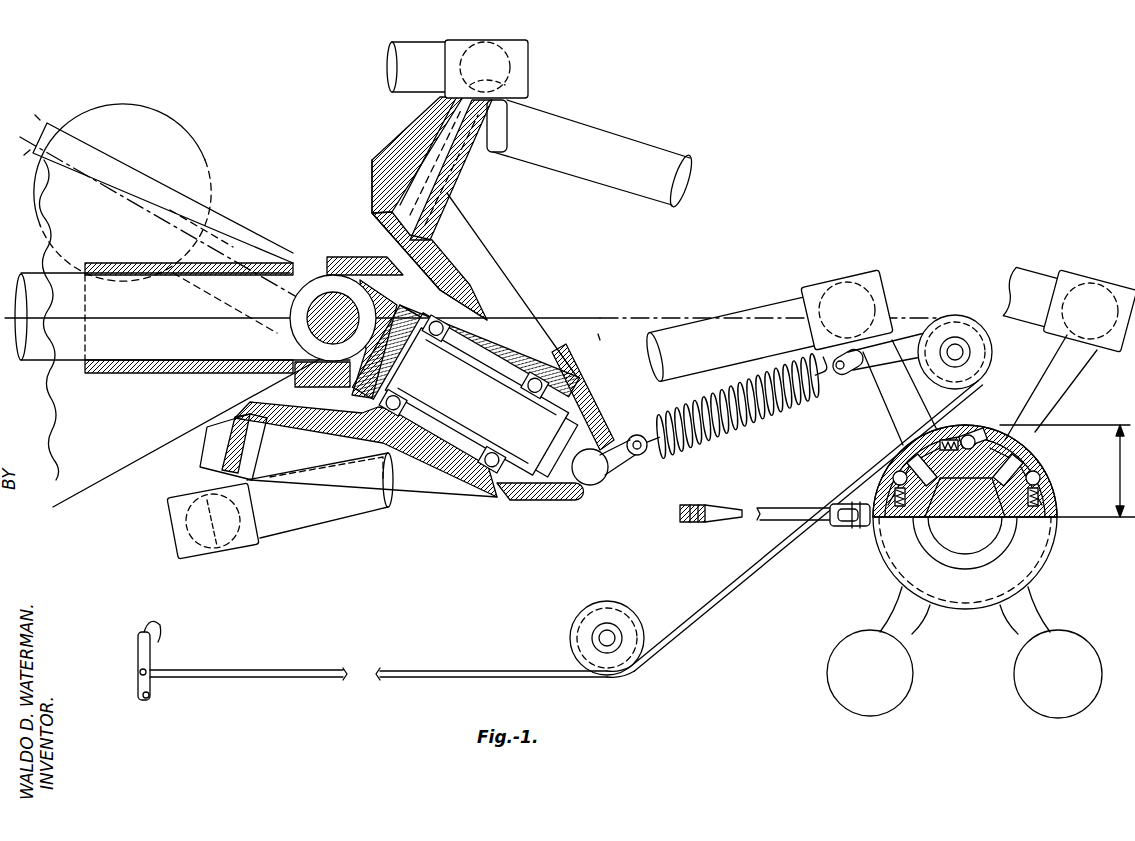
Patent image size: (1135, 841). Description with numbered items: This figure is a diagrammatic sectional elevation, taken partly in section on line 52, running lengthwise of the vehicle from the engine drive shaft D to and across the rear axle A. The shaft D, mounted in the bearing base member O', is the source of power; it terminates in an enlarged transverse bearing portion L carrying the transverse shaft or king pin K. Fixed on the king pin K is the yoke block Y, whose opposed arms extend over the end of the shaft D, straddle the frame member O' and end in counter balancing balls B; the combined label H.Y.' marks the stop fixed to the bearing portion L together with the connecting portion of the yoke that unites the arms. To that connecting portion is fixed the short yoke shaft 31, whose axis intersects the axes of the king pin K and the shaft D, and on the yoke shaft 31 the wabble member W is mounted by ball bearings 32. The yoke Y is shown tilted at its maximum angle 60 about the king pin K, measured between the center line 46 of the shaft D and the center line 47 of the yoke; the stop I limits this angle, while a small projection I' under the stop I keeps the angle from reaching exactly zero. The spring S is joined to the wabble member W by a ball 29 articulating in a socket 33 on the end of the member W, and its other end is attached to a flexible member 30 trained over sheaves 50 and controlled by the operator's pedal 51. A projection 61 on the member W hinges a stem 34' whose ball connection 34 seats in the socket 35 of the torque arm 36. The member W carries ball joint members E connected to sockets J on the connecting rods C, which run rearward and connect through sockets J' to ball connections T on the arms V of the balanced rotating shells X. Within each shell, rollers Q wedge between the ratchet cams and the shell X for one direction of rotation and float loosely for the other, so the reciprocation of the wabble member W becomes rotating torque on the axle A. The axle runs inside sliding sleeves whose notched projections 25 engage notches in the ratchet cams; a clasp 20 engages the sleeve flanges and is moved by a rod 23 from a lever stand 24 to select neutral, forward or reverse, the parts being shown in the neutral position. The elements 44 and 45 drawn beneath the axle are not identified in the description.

The clasp 20 is at (848, 522).
The rod 23 is at (776, 505).
The lever stand 24 is at (680, 513).
The projections on the sleeve 25 is at (900, 470).
The ball 29 is at (585, 497).
The flexible member 30 is at (487, 668).
The yoke shaft 31 is at (478, 405).
The ball bearings 32 is at (458, 478).
The socket 33 is at (525, 500).
The ball connection 34 is at (521, 67).
The stem 34' is at (420, 162).
The socket 35 is at (530, 92).
The torque arm 36 is at (388, 62).
The leg 44 is at (1010, 618).
The wheel 45 is at (1012, 672).
The center line of shaft D 46 is at (552, 318).
The center line of yoke Y 47 is at (610, 470).
The sheaves 50 is at (965, 325).
The pedal 51 is at (150, 657).
The section line 52 is at (1065, 471).
The maximum angle 60 is at (574, 438).
The projection 61 is at (455, 182).
The rear axle A is at (1000, 537).
The counter balancing balls B is at (150, 125).
The connecting rods C is at (522, 158).
The engine drive shaft D is at (50, 362).
The ball joint members E is at (222, 540).
The stop H and yoke connecting portion Y' H.Y.' is at (328, 384).
The stop I is at (364, 229).
The small projection I' is at (246, 318).
The sockets J is at (337, 344).
The sockets J' is at (968, 281).
The transverse shaft or king pin K is at (325, 300).
The enlarged transverse bearing portion L is at (302, 330).
The bearing base member O' is at (205, 304).
The rollers Q is at (1050, 481).
The spring S is at (748, 425).
The ball connections T is at (838, 300).
The arms V is at (876, 401).
The wabble member W is at (478, 290).
The balanced rotating shells X is at (1045, 466).
The yoke block Y is at (281, 225).